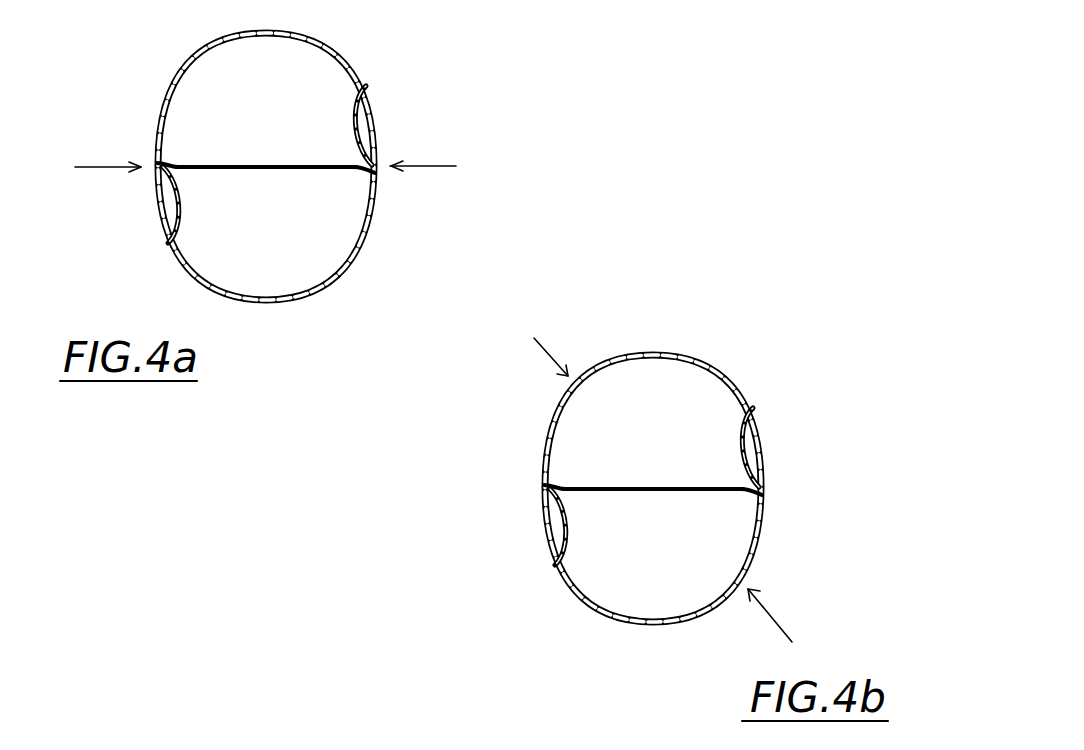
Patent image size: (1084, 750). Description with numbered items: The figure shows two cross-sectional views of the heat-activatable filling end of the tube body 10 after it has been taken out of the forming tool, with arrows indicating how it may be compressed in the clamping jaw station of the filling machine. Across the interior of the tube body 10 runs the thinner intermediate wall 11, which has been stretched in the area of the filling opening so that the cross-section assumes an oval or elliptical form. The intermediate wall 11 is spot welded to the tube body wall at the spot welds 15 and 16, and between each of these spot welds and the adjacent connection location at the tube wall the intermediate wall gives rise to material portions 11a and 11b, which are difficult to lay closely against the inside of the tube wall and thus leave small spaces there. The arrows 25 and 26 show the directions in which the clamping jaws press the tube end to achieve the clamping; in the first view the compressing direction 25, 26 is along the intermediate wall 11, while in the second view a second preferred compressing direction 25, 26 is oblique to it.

In FIG. 4A, the tube body 10 is at (337, 56).
In FIG. 4B, the tube body 10 is at (710, 481).
In FIG. 4A, the intermediate wall 11 is at (236, 165).
In FIG. 4B, the intermediate wall 11 is at (591, 443).
In FIG. 4A, the material portion 11a is at (174, 212).
In FIG. 4B, the material portion 11a is at (505, 553).
In FIG. 4A, the material portion 11b is at (356, 121).
In FIG. 4B, the material portion 11b is at (807, 433).
In FIG. 4A, the spot weld 15 is at (370, 168).
In FIG. 4B, the spot weld 15 is at (808, 516).
In FIG. 4A, the spot weld 16 is at (160, 163).
In FIG. 4B, the spot weld 16 is at (502, 464).
In FIG. 4A, the arrow 25 is at (425, 165).
In FIG. 4B, the arrow 25 is at (773, 620).
In FIG. 4A, the arrow 26 is at (108, 176).
In FIG. 4B, the arrow 26 is at (540, 350).